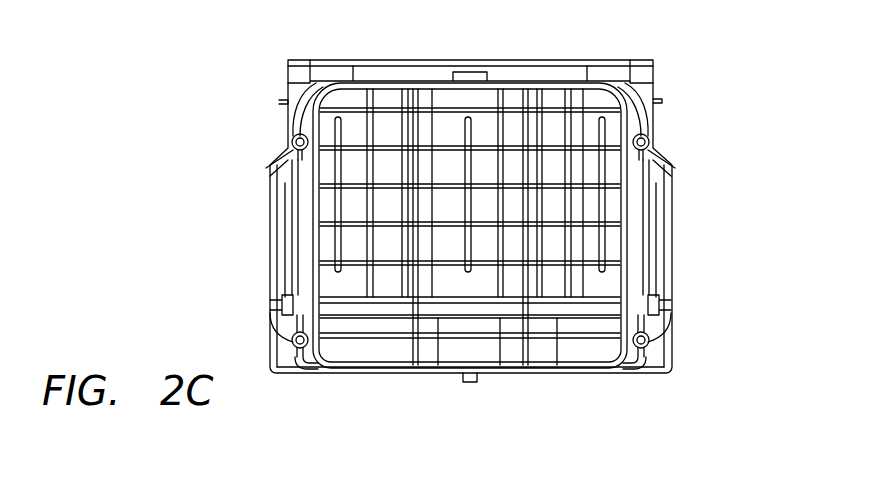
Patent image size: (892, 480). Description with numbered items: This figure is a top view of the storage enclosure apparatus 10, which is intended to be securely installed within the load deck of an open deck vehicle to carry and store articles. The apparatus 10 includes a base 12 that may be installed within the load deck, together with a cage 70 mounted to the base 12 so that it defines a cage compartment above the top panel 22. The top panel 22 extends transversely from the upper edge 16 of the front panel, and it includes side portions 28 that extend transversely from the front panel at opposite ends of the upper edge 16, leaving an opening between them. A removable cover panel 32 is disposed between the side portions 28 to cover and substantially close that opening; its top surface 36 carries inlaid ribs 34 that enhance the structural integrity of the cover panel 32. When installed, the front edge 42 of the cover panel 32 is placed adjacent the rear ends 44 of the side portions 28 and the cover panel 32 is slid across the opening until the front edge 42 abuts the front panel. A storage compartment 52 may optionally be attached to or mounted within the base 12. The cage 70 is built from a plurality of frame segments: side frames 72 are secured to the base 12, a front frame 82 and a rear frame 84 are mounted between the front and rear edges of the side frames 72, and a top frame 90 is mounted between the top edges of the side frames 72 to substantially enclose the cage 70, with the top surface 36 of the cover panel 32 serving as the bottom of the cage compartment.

The storage enclosure apparatus 10 is at (246, 96).
The base 12 is at (617, 387).
The upper edge 16 is at (287, 368).
The top panel 22 is at (305, 247).
The side portions 28 is at (287, 128).
The cover panel 32 is at (542, 73).
The ribs 34 is at (436, 95).
The top surface 36 is at (480, 95).
The front edge 42 is at (386, 59).
The rear ends 44 is at (632, 62).
The storage compartment 52 is at (478, 350).
The cage 70 is at (656, 242).
The side frames 72 is at (660, 147).
The front frame 82 is at (320, 377).
The rear frame 84 is at (316, 88).
The top frame 90 is at (548, 300).